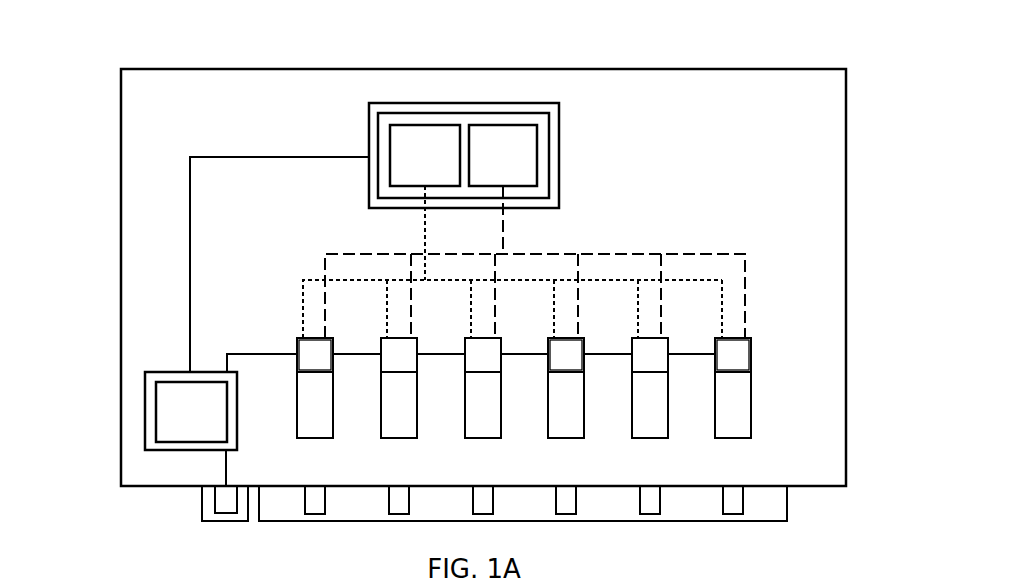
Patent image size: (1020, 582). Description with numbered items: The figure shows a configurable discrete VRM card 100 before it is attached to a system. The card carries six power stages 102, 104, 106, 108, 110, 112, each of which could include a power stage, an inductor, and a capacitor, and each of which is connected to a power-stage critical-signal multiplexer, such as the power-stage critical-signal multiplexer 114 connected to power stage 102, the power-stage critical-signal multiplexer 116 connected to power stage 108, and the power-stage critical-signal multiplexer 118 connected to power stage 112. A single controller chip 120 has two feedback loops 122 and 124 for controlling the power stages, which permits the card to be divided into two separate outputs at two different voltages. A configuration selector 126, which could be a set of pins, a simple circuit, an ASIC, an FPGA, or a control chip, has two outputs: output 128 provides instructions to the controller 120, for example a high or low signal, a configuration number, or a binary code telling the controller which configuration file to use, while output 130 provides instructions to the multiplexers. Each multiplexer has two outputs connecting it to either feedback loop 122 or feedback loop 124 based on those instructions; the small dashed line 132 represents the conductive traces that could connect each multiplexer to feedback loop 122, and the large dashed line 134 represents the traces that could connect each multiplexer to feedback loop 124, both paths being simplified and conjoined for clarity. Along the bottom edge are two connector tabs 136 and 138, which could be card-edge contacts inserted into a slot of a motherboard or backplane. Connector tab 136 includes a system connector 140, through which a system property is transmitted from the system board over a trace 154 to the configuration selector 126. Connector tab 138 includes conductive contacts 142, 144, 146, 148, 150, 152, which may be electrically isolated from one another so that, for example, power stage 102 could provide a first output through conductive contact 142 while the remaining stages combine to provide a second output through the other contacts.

The VRM card 100 is at (148, 48).
The power stage 102 is at (320, 424).
The power stage 104 is at (403, 424).
The power stage 106 is at (487, 424).
The power stage 108 is at (570, 424).
The power stage 110 is at (653, 424).
The power stage 112 is at (737, 424).
The power-stage critical-signal multiplexer 114 is at (312, 358).
The power-stage critical-signal multiplexer 116 is at (574, 360).
The power-stage critical-signal multiplexer 118 is at (738, 358).
The controller chip 120 is at (560, 190).
The feedback loop 122 is at (400, 140).
The feedback loop 124 is at (525, 152).
The configuration selector 126 is at (207, 430).
The output 128 is at (255, 156).
The output 130 is at (280, 353).
The small dashed line 132 is at (303, 281).
The large dashed line 134 is at (745, 260).
The connector tab 136 is at (210, 493).
The connector tab 138 is at (777, 502).
The system connector 140 is at (225, 510).
The conductive contact 142 is at (310, 495).
The conductive contact 144 is at (395, 495).
The conductive contact 146 is at (480, 495).
The conductive contact 148 is at (563, 495).
The conductive contact 150 is at (647, 495).
The conductive contact 152 is at (730, 495).
The trace 154 is at (226, 476).